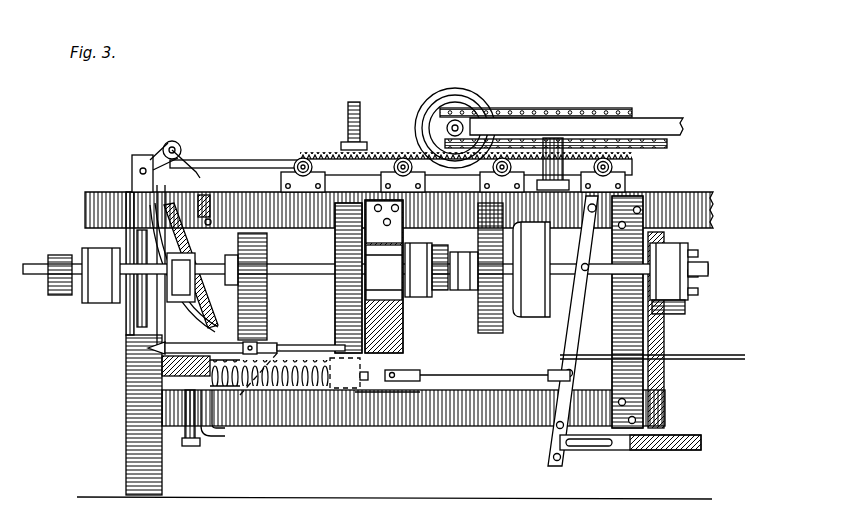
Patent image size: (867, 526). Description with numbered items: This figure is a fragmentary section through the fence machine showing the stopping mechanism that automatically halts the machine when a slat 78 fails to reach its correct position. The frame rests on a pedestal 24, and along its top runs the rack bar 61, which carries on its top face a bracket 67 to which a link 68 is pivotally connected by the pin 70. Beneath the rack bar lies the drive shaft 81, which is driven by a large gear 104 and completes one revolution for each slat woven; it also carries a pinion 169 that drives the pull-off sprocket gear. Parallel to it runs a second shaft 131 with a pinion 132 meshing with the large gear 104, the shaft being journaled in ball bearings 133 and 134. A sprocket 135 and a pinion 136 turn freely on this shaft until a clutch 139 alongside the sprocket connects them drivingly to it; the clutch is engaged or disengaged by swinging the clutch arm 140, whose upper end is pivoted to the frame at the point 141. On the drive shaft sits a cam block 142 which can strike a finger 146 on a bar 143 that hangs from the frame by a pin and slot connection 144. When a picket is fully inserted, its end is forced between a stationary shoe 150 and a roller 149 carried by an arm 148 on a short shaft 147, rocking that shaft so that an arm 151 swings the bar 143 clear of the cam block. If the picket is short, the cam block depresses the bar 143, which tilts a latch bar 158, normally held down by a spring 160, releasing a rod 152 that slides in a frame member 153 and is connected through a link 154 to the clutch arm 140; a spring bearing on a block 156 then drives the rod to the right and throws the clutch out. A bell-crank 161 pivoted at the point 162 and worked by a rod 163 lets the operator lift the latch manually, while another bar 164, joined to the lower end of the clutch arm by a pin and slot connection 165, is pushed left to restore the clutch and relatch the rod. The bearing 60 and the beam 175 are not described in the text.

The pedestal 24 is at (140, 468).
The bearing 60 is at (403, 158).
The rack bar 61 is at (384, 156).
The bracket 67 is at (420, 118).
The link 68 is at (646, 126).
The pin 70 is at (472, 112).
The slat 78 is at (222, 160).
The drive shaft 81 is at (34, 262).
The large gear 104 is at (336, 330).
The shaft 131 is at (414, 280).
The pinion 132 is at (330, 282).
The ball bearing 133 is at (406, 304).
The ball bearing 134 is at (668, 267).
The sprocket 135 is at (488, 326).
The pinion 136 is at (444, 292).
The clutch 139 is at (533, 327).
The clutch arm 140 is at (615, 342).
The pivot point 141 is at (612, 196).
The cam block 142 is at (208, 200).
The bar 143 is at (330, 312).
The pin and slot connection 144 is at (245, 205).
The finger 146 is at (162, 346).
The shaft 147 is at (132, 168).
The arm 148 is at (162, 150).
The roller 149 is at (172, 140).
The stationary shoe 150 is at (194, 160).
The arm 151 is at (162, 358).
The rod 152 is at (350, 390).
The frame member 153 is at (328, 388).
The link 154 is at (490, 375).
The block 156 is at (290, 398).
The latch bar 158 is at (175, 364).
The spring 160 is at (190, 410).
The bell-crank 161 is at (215, 438).
The pivot point 162 is at (225, 410).
The rod 163 is at (706, 360).
The bar 164 is at (675, 450).
The pin and slot connection 165 is at (578, 452).
The pinion 169 is at (56, 292).
The frame beam 175 is at (88, 214).